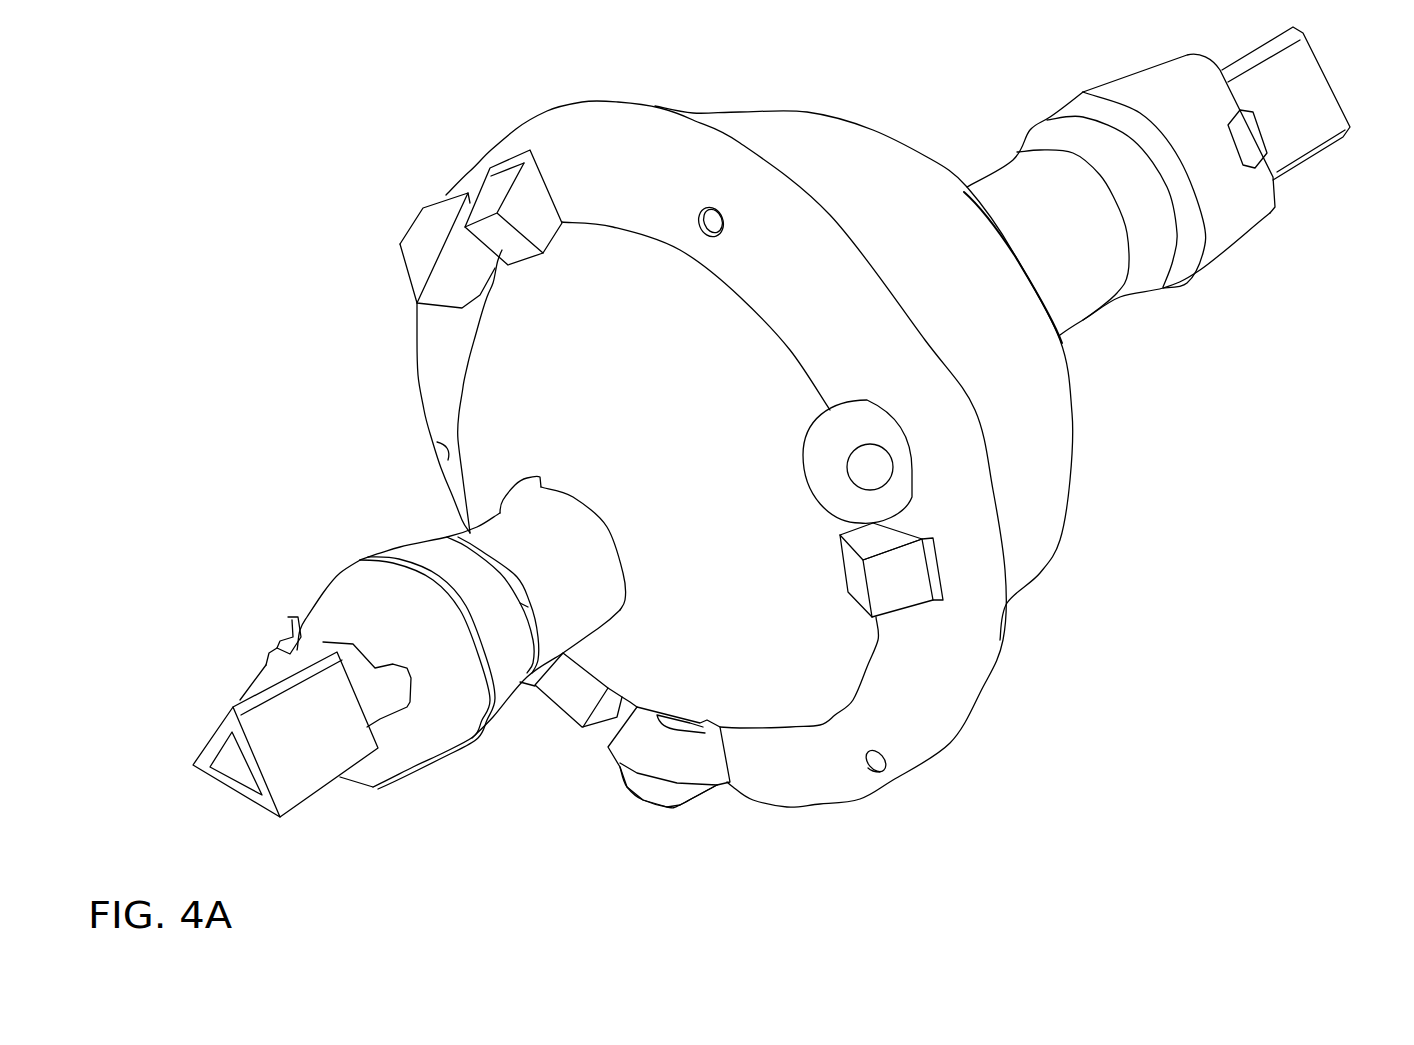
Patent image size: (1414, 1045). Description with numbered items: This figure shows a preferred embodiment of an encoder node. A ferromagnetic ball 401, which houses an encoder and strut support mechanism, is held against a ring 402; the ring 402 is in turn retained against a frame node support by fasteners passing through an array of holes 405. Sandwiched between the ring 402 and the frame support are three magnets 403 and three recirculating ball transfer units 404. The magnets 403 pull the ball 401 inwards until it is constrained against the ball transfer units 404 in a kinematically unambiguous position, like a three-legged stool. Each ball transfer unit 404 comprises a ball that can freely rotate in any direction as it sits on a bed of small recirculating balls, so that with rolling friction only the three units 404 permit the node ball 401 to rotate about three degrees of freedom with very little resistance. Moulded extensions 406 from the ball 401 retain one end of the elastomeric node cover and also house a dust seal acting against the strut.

The ferromagnetic ball 401 is at (753, 643).
The ring 402 is at (915, 375).
The magnet 403 is at (890, 585).
The recirculating ball transfer unit 404 is at (462, 308).
The array of holes 405 is at (880, 770).
The moulded extension 406 is at (1247, 200).